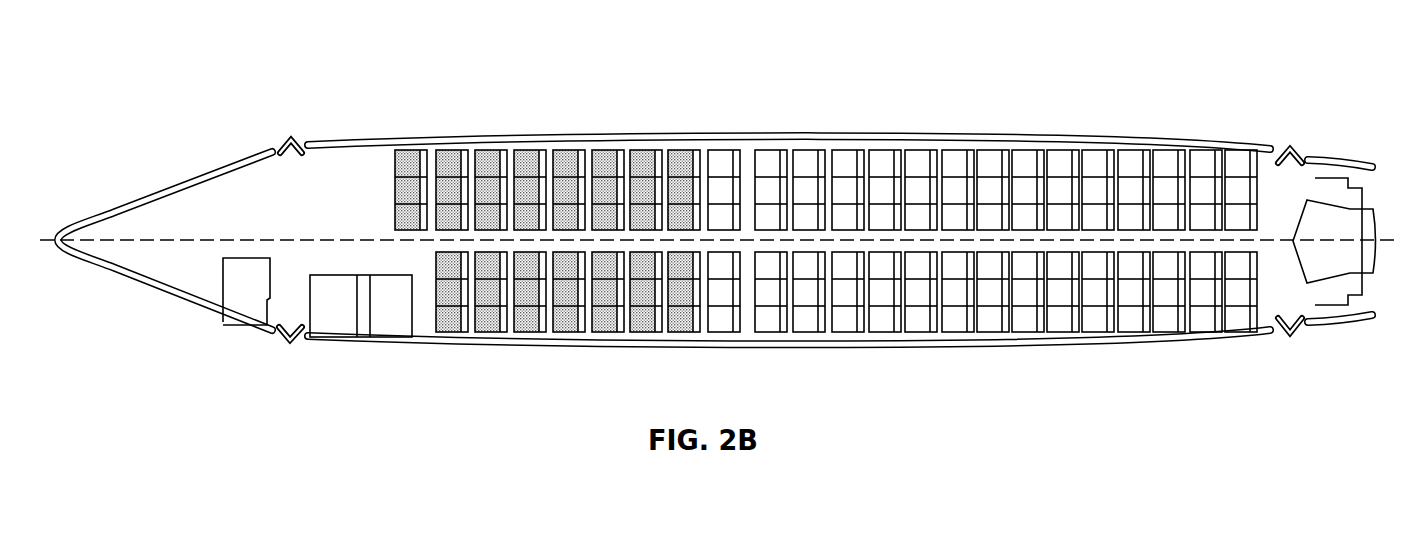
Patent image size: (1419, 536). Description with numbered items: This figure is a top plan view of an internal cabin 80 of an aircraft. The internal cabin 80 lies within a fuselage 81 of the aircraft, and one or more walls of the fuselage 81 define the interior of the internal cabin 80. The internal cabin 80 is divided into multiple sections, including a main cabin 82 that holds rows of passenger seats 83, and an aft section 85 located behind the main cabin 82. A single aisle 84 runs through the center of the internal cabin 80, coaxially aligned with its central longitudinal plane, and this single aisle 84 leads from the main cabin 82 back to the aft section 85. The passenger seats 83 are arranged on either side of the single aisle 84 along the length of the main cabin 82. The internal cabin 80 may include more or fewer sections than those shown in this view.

The internal cabin 80 is at (309, 84).
The fuselage 81 is at (513, 140).
The main cabin 82 is at (452, 167).
The passenger seats 83 is at (722, 170).
The single aisle 84 is at (846, 235).
The aft section 85 is at (1275, 172).